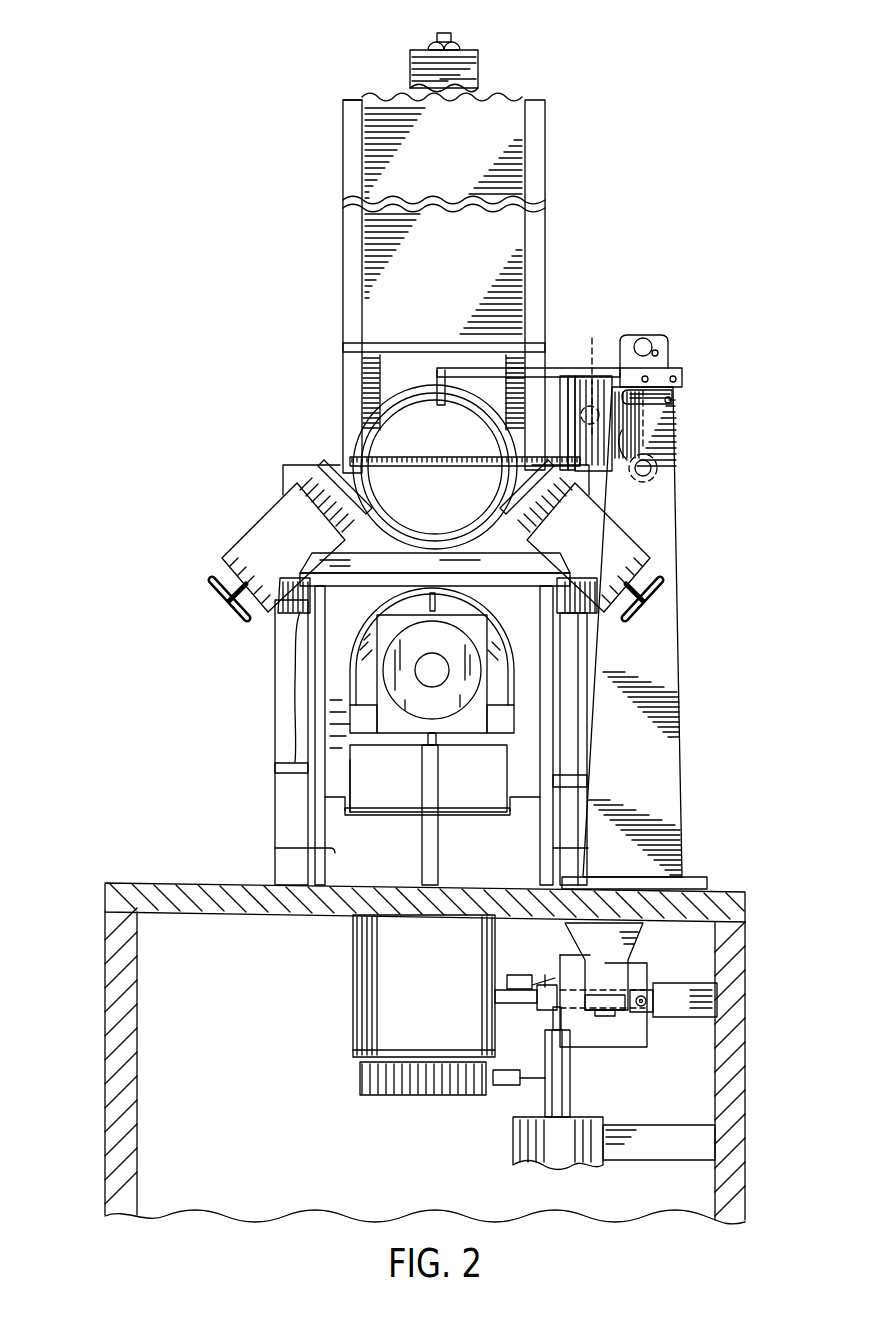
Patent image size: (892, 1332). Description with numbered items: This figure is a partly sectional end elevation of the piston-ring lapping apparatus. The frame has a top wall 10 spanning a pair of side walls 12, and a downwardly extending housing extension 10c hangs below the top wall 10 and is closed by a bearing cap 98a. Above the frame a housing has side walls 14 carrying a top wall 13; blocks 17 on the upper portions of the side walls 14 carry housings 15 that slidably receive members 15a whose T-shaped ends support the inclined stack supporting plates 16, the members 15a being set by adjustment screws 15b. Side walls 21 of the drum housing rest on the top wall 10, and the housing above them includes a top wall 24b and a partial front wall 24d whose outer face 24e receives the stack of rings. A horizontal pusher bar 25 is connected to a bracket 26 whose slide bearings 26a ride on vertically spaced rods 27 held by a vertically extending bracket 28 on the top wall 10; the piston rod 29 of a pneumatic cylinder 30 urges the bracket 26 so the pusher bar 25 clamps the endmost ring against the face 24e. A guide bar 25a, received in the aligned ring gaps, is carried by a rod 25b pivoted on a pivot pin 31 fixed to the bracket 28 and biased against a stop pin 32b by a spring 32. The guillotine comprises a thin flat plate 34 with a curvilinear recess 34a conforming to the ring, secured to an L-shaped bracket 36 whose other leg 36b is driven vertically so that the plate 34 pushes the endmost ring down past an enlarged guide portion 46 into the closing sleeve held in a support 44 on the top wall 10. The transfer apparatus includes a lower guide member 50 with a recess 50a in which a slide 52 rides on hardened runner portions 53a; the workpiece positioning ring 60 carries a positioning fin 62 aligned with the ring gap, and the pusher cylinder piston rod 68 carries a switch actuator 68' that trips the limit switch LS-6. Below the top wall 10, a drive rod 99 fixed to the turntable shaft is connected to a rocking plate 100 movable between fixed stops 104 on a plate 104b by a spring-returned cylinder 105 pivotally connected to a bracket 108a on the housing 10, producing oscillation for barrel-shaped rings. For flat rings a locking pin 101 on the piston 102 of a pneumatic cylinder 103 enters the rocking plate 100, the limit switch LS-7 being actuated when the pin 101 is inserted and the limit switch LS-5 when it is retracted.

The top wall 10 is at (200, 885).
The housing extension 10c is at (353, 1038).
The side walls 12 is at (104, 1030).
The top wall 13 is at (378, 578).
The side walls 14 is at (275, 776).
The housings 15 is at (275, 530).
The members 15a is at (295, 486).
The adjustment screws 15b is at (223, 612).
The stack supporting plates 16 is at (320, 461).
The blocks 17 is at (278, 614).
The side walls 21 is at (275, 712).
The top wall 24b is at (343, 100).
The partial front wall 24d is at (358, 432).
The outer face 24e is at (443, 508).
The pusher bar 25 is at (430, 460).
The guide bar 25a is at (439, 406).
The rod 25b is at (518, 366).
The bracket 26 is at (622, 441).
The slide bearings 26a is at (646, 334).
The rods 27 is at (651, 346).
The bracket 28 is at (670, 646).
The piston rod 29 is at (594, 348).
The pneumatic cylinder 30 is at (583, 379).
The pivot pin 31 is at (672, 404).
The spring 32 is at (672, 376).
The stop pin 32b is at (665, 403).
The flat plate 34 is at (455, 269).
The curvilinear recess 34a is at (363, 393).
The L-shaped bracket 36 is at (476, 84).
The leg 36b is at (464, 50).
The support 44 is at (311, 810).
The guide portion 46 is at (503, 583).
The lower guide member 50 is at (275, 848).
The recess 50a is at (390, 810).
The slide 52 is at (454, 808).
The hardened runner portions 53a is at (369, 812).
The workpiece positioning ring 60 is at (495, 641).
The positioning fin 62 is at (401, 613).
The piston rod 68 is at (432, 674).
The switch actuator 68' is at (432, 689).
The bearing cap 98a is at (360, 1086).
The drive rod 99 is at (510, 975).
The rocking plate 100 is at (542, 1012).
The locking pin 101 is at (564, 1030).
The piston 102 is at (568, 1094).
The pneumatic cylinder 103 is at (515, 1152).
The fixed stops 104 is at (656, 1015).
The plate 104b is at (680, 998).
The cylinder 105 is at (622, 1045).
The bracket 108a is at (620, 954).
The limit switch LS-5 is at (510, 1088).
The limit switch LS-6 is at (435, 753).
The limit switch LS-7 is at (547, 975).